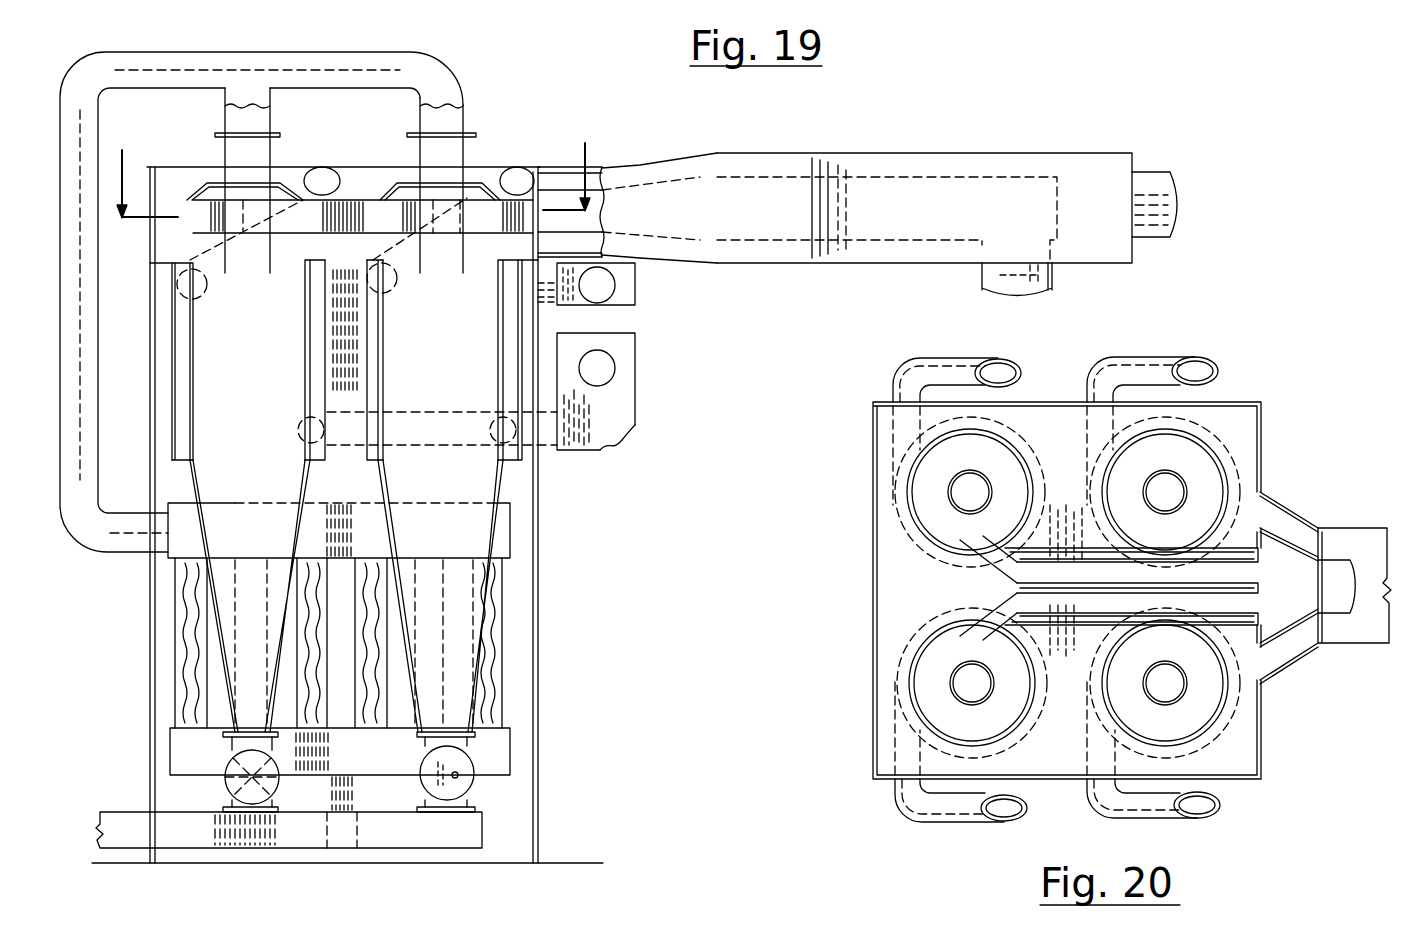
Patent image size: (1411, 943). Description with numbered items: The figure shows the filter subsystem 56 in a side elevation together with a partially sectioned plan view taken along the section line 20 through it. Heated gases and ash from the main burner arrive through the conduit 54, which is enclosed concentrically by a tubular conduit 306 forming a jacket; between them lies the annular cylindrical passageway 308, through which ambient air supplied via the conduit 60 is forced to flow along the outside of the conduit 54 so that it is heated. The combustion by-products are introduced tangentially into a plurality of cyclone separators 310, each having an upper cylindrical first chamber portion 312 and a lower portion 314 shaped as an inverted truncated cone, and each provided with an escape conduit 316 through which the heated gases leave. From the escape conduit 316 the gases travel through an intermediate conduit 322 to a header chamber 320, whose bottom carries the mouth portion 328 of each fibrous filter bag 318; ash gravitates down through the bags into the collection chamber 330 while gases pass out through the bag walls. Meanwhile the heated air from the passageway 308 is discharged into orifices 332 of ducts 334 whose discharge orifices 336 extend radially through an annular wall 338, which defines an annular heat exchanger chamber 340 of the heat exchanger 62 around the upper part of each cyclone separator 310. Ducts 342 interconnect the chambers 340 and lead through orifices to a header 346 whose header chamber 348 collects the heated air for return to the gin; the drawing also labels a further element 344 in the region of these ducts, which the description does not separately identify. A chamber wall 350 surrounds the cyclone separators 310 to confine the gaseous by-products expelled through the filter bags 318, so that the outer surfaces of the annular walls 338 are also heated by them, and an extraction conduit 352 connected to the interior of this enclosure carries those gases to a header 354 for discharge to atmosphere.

In FIG. 19, the section line 20— 20 is at (355, 169).
In FIG. 19, the conduit 54 is at (892, 228).
In FIG. 20, the conduit 54 is at (1340, 575).
In FIG. 19, the filter subsystem 56 is at (136, 614).
In FIG. 19, the conduit 60 is at (1155, 177).
In FIG. 19, the heat exchanger 62 is at (182, 413).
In FIG. 19, the tubular conduit 306 is at (910, 153).
In FIG. 19, the cylindrical passageway 308 is at (757, 160).
In FIG. 20, the cylindrical passageway 308 is at (1343, 645).
In FIG. 19, the cyclone separators 310 is at (213, 362).
In FIG. 20, the cyclone separators 310 is at (925, 498).
In FIG. 19, the first chamber portion 312 is at (415, 403).
In FIG. 19, the lower portion 314 is at (467, 542).
In FIG. 19, the escape conduit 316 is at (427, 148).
In FIG. 20, the escape conduit 316 is at (1153, 480).
In FIG. 19, the fibrous filter bags 318 is at (187, 677).
In FIG. 19, the header chamber 320 is at (505, 530).
In FIG. 19, the intermediate conduit 322 is at (327, 58).
In FIG. 19, the mouth portion 328 is at (330, 703).
In FIG. 19, the collection chamber 330 is at (497, 748).
In FIG. 19, the orifices 332 is at (323, 172).
In FIG. 19, the ducts 334 is at (400, 246).
In FIG. 20, the ducts 334 is at (962, 364).
In FIG. 19, the discharge orifices 336 is at (208, 292).
In FIG. 19, the annular wall 338 is at (170, 300).
In FIG. 19, the annular heat exchanger chamber 340 is at (177, 323).
In FIG. 20, the annular heat exchanger chamber 340 is at (1213, 437).
In FIG. 19, the ducts 342 is at (343, 438).
In FIG. 19, the cross duct 344 is at (313, 424).
In FIG. 19, the header 346 is at (632, 350).
In FIG. 19, the header chamber 348 is at (634, 442).
In FIG. 19, the chamber wall 350 is at (545, 783).
In FIG. 19, the extraction conduit 352 is at (545, 300).
In FIG. 19, the header 354 is at (625, 287).